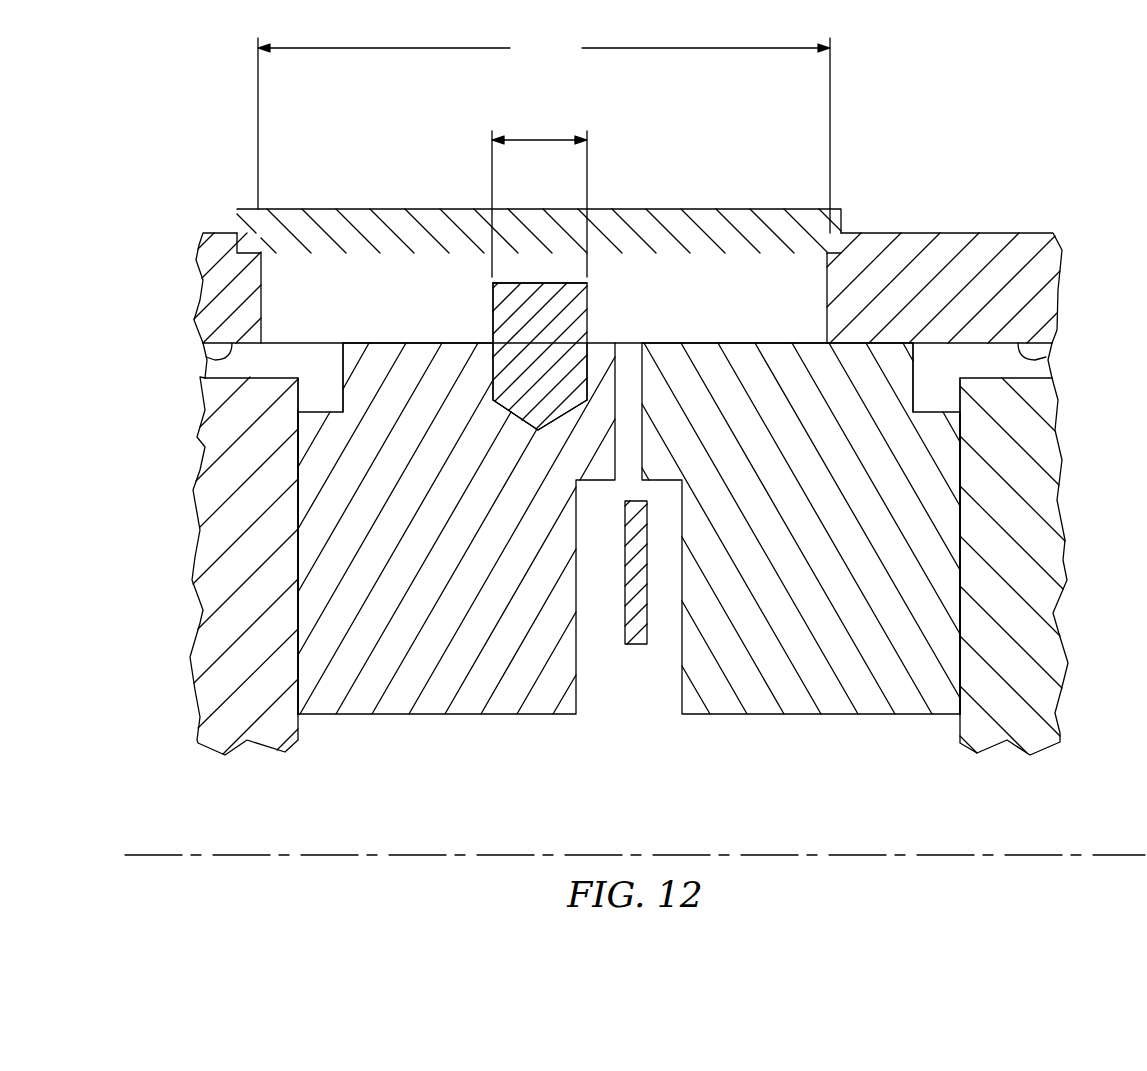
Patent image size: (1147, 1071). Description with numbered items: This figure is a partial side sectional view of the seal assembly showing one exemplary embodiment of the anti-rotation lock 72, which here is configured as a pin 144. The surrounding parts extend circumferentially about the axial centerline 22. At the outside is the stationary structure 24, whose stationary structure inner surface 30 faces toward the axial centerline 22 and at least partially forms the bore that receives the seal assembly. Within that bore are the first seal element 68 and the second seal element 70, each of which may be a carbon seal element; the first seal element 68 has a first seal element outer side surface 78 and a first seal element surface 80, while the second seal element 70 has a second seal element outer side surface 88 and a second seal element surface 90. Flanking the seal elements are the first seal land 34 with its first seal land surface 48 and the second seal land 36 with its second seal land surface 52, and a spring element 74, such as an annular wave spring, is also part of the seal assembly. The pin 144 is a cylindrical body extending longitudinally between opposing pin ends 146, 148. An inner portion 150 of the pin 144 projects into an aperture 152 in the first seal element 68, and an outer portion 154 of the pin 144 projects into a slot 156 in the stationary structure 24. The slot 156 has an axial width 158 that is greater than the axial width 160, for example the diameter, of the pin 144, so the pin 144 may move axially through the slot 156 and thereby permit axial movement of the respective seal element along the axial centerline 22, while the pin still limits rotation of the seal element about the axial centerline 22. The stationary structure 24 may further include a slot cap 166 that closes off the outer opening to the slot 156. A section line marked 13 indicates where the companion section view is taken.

The axial centerline 22 is at (1110, 855).
The stationary structure 24 is at (1048, 217).
The stationary structure inner surface 30 is at (210, 356).
The first seal land 34 is at (991, 632).
The second seal land 36 is at (232, 657).
The first seal land surface 48 is at (958, 516).
The second seal land surface 52 is at (300, 510).
The first seal element 68 is at (793, 595).
The second seal element 70 is at (436, 600).
The anti-rotation lock 72 is at (618, 356).
The spring element 74 is at (652, 610).
The first seal element outer side surface 78 is at (792, 343).
The first seal element surface 80 is at (962, 496).
The second seal element outer side surface 88 is at (373, 343).
The second seal element surface 90 is at (298, 497).
The pin 144 is at (593, 325).
The pin end 146 is at (527, 401).
The pin end 148 is at (533, 283).
The inner portion 150 is at (592, 373).
The aperture 152 is at (488, 366).
The outer portion 154 is at (489, 310).
The slot 156 is at (329, 277).
The axial width 158 is at (544, 133).
The axial width 160 is at (556, 137).
The slot cap 166 is at (366, 209).
The section line 13- 13 is at (540, 123).